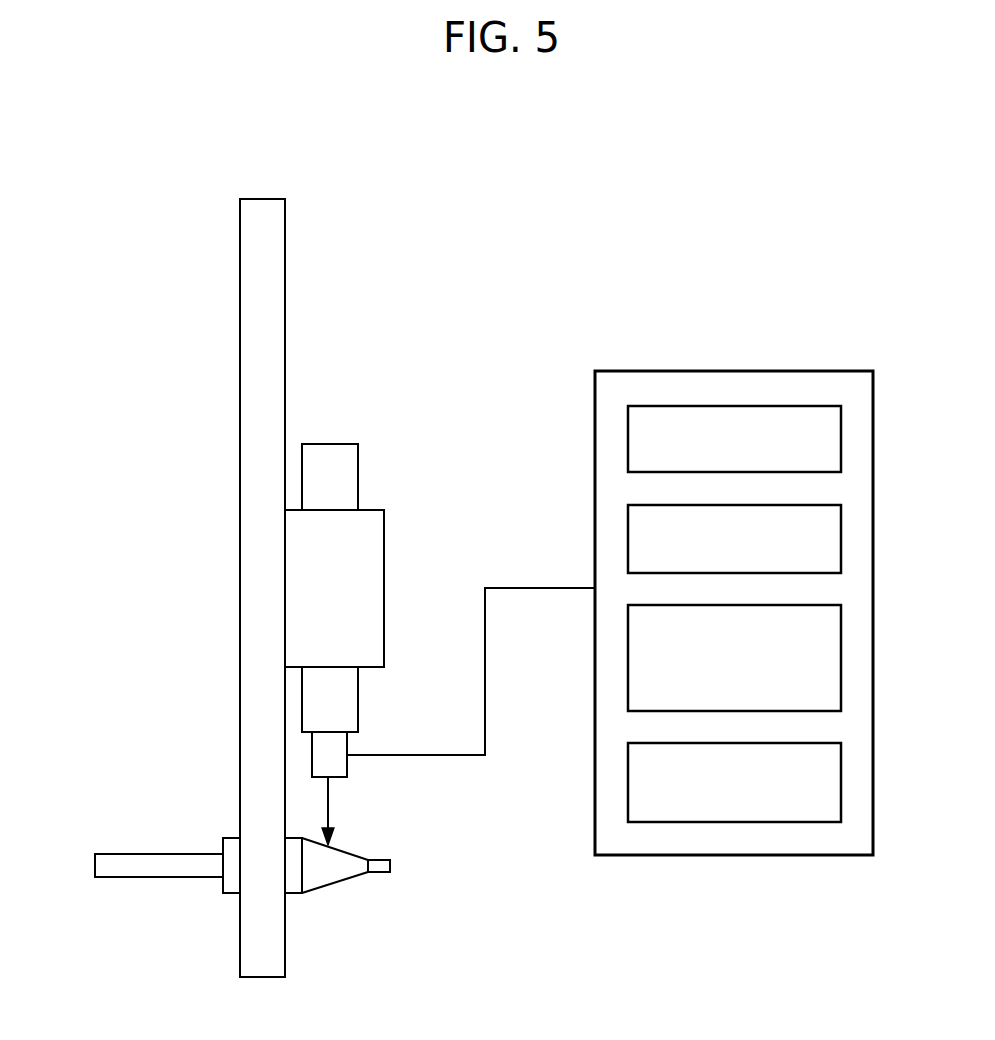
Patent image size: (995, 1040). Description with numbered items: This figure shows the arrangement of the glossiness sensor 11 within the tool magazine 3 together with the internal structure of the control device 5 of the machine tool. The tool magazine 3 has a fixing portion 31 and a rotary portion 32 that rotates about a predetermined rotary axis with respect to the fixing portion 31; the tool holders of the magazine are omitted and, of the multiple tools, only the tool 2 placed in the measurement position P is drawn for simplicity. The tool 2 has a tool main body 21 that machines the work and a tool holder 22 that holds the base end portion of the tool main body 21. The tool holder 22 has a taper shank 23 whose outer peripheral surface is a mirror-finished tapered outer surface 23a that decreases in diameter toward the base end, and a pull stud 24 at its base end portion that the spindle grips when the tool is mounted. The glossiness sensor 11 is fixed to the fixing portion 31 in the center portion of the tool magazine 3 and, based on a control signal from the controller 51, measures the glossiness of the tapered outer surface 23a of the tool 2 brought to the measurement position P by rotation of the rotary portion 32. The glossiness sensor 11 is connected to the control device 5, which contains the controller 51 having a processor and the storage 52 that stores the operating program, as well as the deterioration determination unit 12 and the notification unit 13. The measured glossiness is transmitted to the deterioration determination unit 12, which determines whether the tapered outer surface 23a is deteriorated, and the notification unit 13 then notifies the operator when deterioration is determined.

The tool magazine 3 is at (155, 190).
The rotary portion 32 is at (240, 345).
The fixing portion 31 is at (358, 692).
The glossiness sensor 11 is at (347, 742).
The tool 2 is at (112, 836).
The tool main body 21 is at (165, 854).
The measurement position P is at (228, 902).
The tool holder 22 is at (383, 851).
The taper shank 23 is at (327, 875).
The tapered outer surface 23a is at (348, 856).
The pull stud 24 is at (383, 875).
The control device 5 is at (708, 371).
The controller 51 is at (841, 432).
The storage 52 is at (841, 537).
The deterioration determination unit 12 is at (841, 653).
The notification unit 13 is at (841, 780).